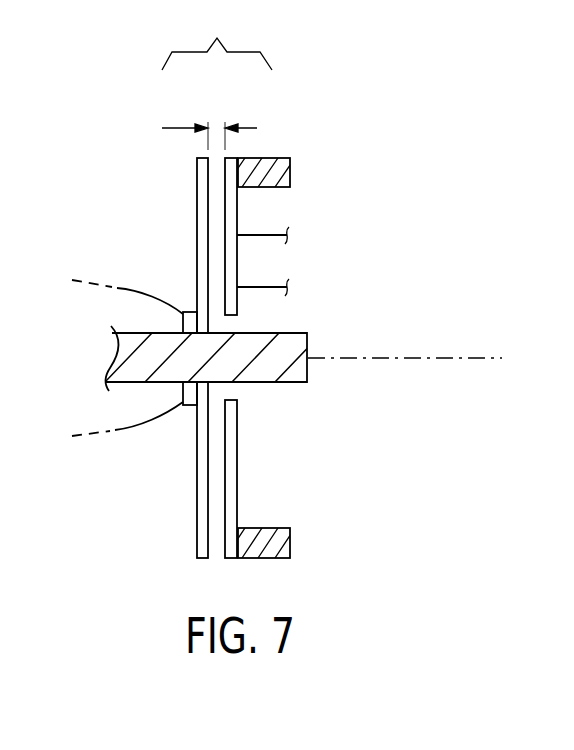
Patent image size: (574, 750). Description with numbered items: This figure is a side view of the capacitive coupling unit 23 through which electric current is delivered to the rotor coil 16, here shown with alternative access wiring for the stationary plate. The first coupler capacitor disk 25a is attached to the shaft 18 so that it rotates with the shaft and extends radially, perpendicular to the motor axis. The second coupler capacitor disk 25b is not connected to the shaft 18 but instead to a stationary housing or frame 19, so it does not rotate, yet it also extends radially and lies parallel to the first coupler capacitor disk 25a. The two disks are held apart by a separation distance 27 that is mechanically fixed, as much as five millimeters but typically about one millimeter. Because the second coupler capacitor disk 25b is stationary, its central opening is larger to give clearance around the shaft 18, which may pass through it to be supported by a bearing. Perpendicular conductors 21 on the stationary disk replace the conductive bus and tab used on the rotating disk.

The rotor coil 16 is at (100, 274).
The shaft 18 is at (292, 383).
The stationary housing or frame 19 is at (291, 163).
The perpendicular conductors 21 is at (262, 284).
The capacitive coupling unit 23 is at (217, 39).
The first coupler capacitor disk 25a is at (203, 158).
The second coupler capacitor disk 25b is at (229, 158).
The separation distance 27 is at (181, 128).